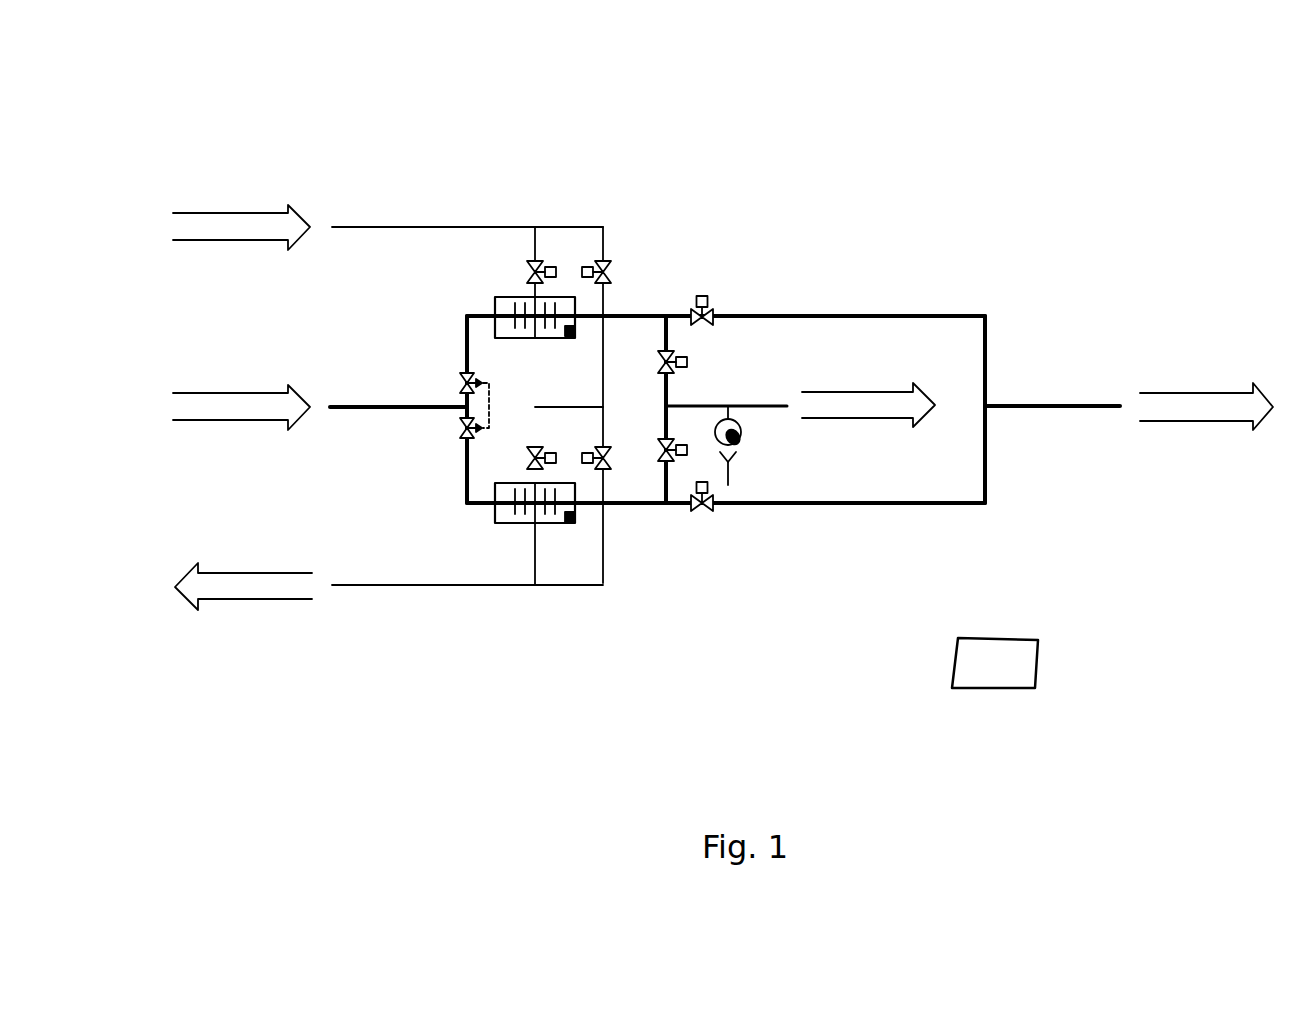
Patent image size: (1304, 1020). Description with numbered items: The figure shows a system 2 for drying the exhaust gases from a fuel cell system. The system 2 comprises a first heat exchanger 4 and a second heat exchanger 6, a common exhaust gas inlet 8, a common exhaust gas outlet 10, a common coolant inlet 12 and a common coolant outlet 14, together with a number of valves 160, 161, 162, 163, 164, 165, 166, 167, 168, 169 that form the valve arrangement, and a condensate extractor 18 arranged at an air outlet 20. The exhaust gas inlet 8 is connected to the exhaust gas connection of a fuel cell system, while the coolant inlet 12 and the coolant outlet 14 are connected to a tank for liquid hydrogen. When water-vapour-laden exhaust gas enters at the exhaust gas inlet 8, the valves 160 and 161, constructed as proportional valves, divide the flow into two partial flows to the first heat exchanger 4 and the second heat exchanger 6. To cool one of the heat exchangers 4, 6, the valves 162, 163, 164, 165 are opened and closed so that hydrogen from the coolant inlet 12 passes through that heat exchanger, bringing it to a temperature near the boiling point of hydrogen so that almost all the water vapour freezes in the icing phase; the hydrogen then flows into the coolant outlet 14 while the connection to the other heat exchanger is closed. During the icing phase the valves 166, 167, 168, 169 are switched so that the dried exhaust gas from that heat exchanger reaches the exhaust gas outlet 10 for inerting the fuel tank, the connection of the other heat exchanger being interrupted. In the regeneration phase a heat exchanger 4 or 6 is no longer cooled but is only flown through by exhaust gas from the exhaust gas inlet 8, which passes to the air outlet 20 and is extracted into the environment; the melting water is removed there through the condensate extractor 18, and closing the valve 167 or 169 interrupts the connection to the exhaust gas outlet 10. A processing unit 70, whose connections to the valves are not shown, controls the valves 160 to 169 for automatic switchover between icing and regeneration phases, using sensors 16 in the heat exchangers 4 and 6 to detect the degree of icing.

The system 2 is at (742, 86).
The first heat exchanger 4 is at (537, 332).
The second heat exchanger 6 is at (553, 520).
The common exhaust gas inlet 8 is at (391, 403).
The common exhaust gas outlet 10 is at (1042, 403).
The common coolant inlet 12 is at (398, 227).
The common coolant outlet 14 is at (425, 585).
The sensors 16 is at (573, 333).
The condensate extractor 18 is at (747, 420).
The air outlet 20 is at (700, 405).
The processing unit 70 is at (1025, 665).
The valve 160 is at (460, 383).
The valve 161 is at (462, 430).
The valve 162 is at (532, 266).
The valve 163 is at (607, 268).
The valve 164 is at (530, 460).
The valve 165 is at (613, 467).
The valve 166 is at (662, 360).
The valve 167 is at (710, 307).
The valve 168 is at (662, 450).
The valve 169 is at (705, 507).